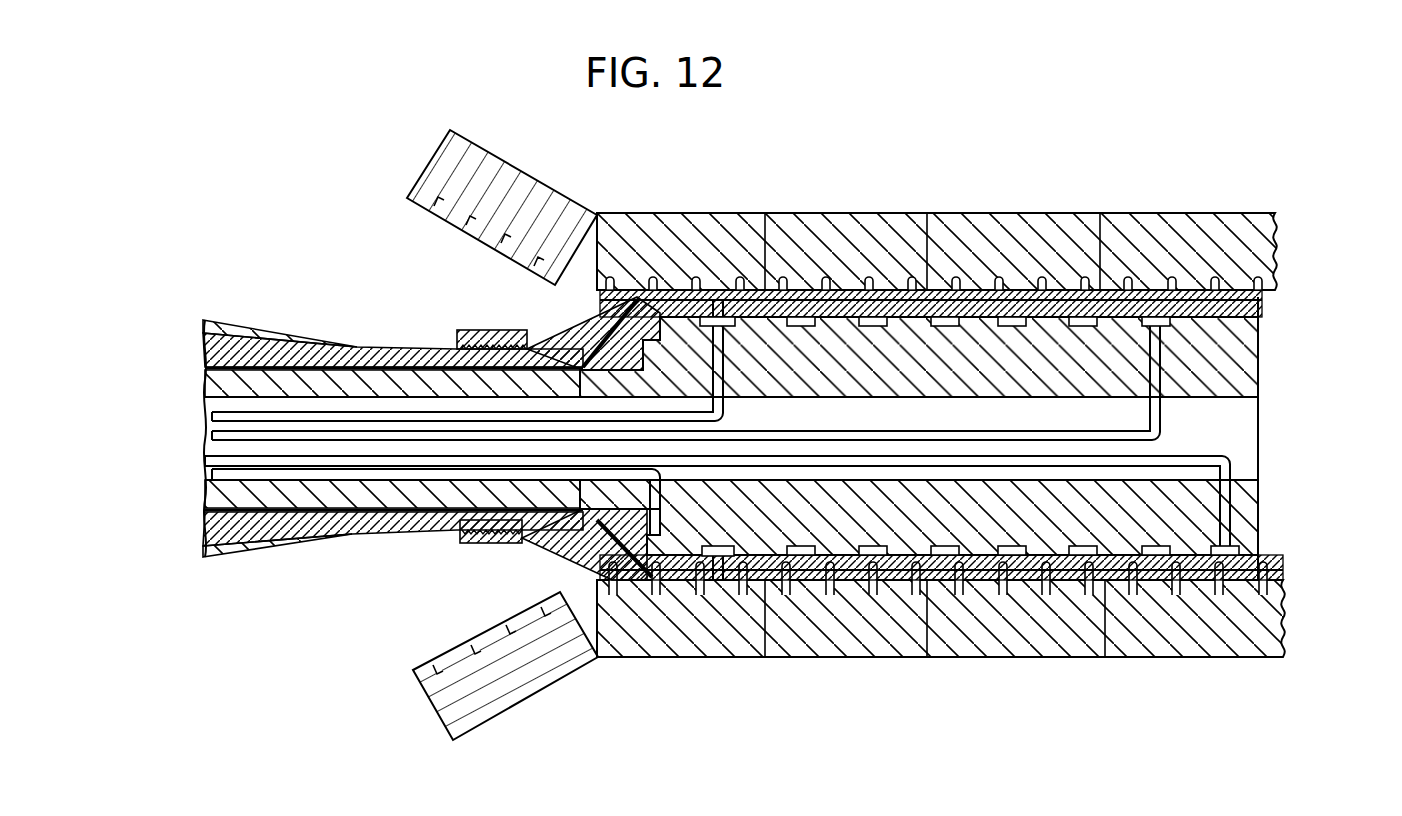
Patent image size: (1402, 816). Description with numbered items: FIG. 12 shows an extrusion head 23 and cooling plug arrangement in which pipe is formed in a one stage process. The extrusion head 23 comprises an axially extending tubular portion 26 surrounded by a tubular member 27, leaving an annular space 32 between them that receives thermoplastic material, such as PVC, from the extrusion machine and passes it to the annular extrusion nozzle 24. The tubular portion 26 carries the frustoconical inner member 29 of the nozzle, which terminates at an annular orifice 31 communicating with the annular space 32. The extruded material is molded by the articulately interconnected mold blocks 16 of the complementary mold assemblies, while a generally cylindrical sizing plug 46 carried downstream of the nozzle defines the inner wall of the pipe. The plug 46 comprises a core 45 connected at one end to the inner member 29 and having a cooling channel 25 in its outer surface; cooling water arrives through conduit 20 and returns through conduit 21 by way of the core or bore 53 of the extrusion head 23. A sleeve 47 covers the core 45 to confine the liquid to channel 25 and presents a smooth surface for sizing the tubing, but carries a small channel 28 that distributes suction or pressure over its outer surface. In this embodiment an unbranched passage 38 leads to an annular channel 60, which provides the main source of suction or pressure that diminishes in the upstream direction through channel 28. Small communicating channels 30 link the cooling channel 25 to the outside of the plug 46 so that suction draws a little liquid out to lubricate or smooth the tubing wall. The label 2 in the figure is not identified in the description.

The mold blocks 16 is at (440, 180).
The channel 28 is at (1192, 290).
The annular orifice 31 is at (642, 292).
The extrusion nozzle 24 is at (608, 660).
The sizing plug 46 is at (869, 352).
The inner member 29 is at (625, 315).
The connector 2 is at (560, 537).
The tubular portion 26 is at (322, 380).
The annular space 32 is at (420, 362).
The extrusion head 23 is at (236, 321).
The conduit 20 is at (455, 332).
The tubular member 27 is at (413, 522).
The bore 53 is at (210, 356).
The core 45 is at (1235, 436).
The passage 38 is at (783, 458).
The conduit 21 is at (1163, 420).
The channel 25 is at (957, 326).
The sleeve 47 is at (1082, 560).
The annular channel 60 is at (1235, 568).
The communicating channels 30 is at (715, 586).